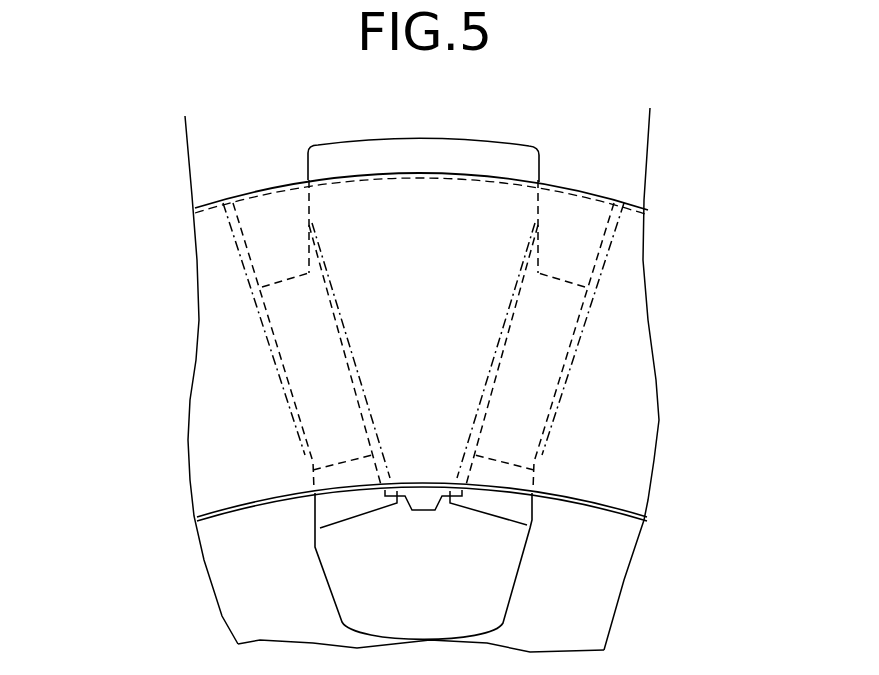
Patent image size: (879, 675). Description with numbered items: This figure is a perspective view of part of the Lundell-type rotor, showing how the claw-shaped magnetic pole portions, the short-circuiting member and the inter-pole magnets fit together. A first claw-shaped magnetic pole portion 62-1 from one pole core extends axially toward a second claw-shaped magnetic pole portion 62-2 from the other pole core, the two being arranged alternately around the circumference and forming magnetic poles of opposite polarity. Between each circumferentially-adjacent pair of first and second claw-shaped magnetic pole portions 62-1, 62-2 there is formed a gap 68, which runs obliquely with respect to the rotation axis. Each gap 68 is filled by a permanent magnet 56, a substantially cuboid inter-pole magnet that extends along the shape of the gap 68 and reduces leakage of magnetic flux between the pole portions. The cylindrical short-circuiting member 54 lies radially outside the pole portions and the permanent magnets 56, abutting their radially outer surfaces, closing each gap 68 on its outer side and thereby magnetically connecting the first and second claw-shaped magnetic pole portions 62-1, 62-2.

The short-circuiting member 54 is at (597, 503).
The first claw-shaped magnetic pole portions 62-1 is at (447, 148).
The second claw-shaped magnetic pole portions 62-2 is at (267, 513).
The permanent magnets 56 is at (307, 330).
The gap 68 is at (572, 247).